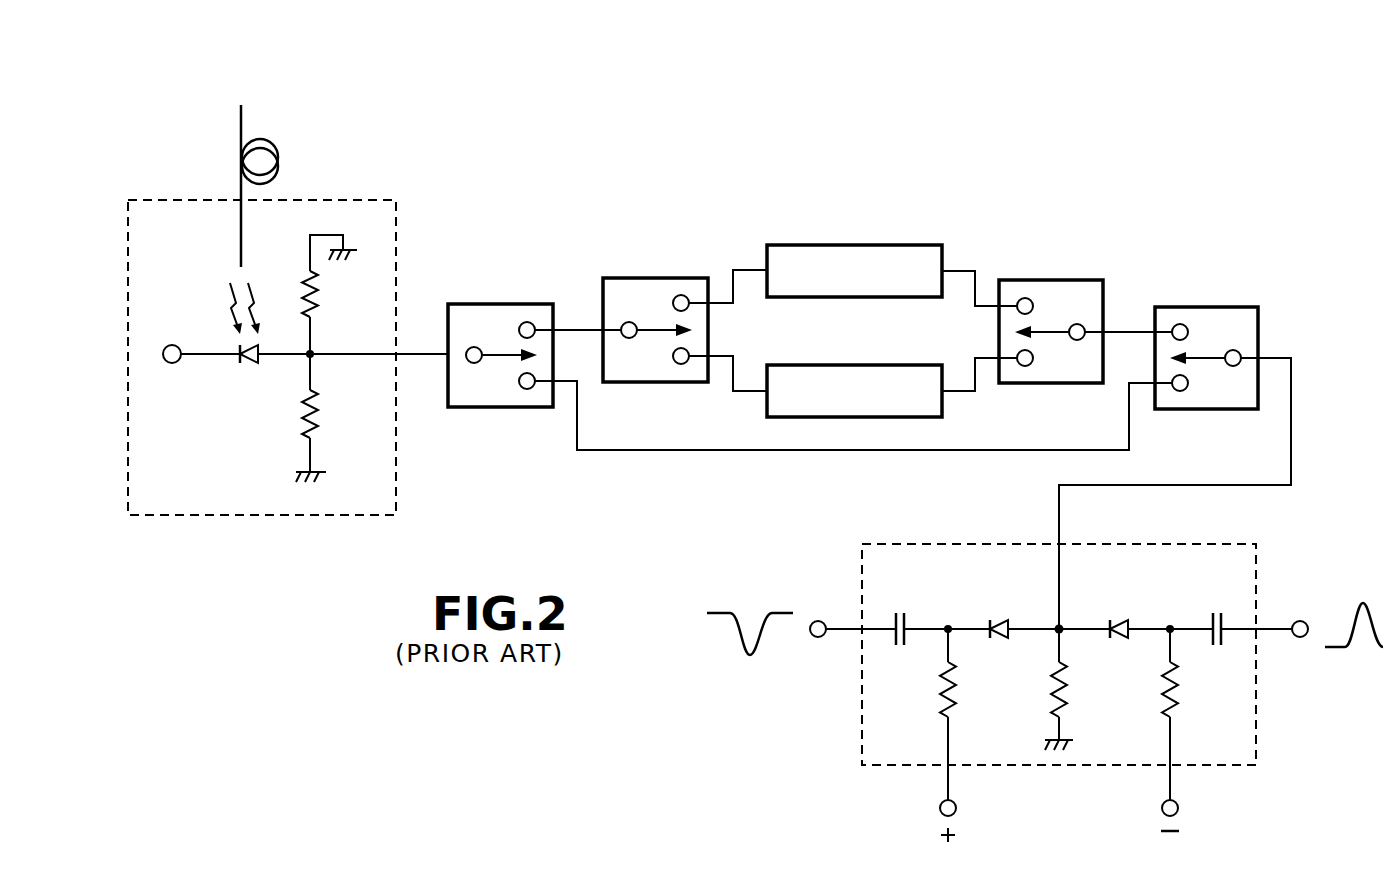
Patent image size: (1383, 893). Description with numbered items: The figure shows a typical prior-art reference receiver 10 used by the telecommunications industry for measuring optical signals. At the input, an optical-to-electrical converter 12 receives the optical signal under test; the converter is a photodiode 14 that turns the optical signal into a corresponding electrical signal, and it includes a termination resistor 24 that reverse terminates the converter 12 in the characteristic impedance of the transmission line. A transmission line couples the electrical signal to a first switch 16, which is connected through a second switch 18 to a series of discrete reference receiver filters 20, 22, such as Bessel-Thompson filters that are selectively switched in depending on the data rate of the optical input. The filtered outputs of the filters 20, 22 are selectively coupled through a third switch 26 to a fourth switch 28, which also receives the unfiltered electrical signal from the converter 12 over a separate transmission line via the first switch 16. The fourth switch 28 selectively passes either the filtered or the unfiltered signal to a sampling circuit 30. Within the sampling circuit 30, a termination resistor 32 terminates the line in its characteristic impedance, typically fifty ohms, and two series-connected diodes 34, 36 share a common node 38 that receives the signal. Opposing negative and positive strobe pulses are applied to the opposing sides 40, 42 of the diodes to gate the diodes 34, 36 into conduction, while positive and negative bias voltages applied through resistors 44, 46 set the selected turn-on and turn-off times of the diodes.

The reference receiver 10 is at (1220, 152).
The optical-to-electrical converter 12 is at (363, 200).
The photodiode 14 is at (247, 365).
The first switch 16 is at (512, 304).
The second switch 18 is at (666, 278).
The reference receiver filter 20 is at (907, 245).
The reference receiver filter 22 is at (907, 365).
The termination resistor 24 is at (320, 410).
The third switch 26 is at (1062, 280).
The fourth switch 28 is at (1218, 307).
The sampling circuit 30 is at (915, 544).
The termination resistor 32 is at (1069, 690).
The diode 34 is at (995, 622).
The diode 36 is at (1116, 620).
The common node 38 is at (1057, 626).
The opposing side of diodes 40 is at (818, 621).
The opposing side of diodes 42 is at (1300, 621).
The bias resistor 44 is at (958, 690).
The bias resistor 46 is at (1180, 690).